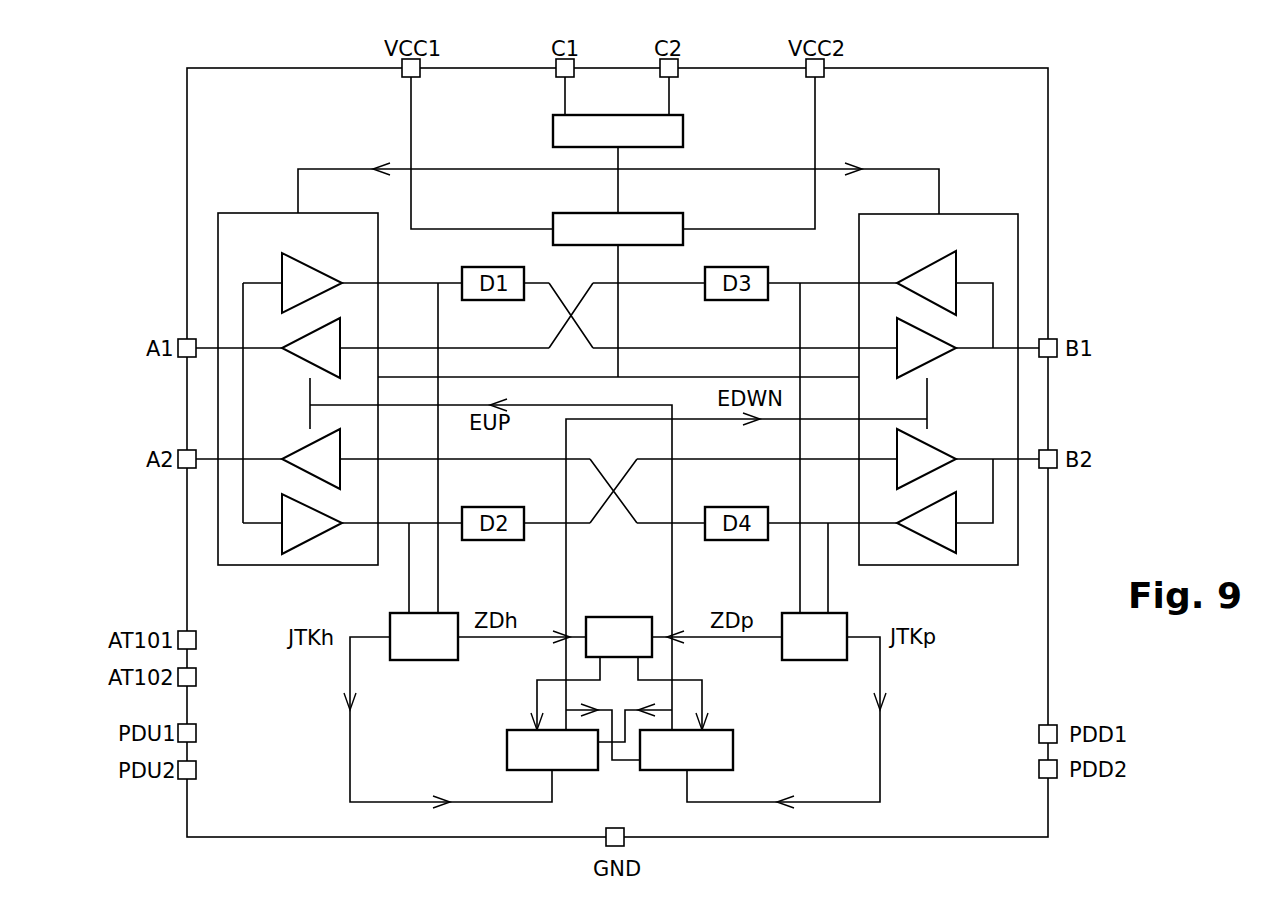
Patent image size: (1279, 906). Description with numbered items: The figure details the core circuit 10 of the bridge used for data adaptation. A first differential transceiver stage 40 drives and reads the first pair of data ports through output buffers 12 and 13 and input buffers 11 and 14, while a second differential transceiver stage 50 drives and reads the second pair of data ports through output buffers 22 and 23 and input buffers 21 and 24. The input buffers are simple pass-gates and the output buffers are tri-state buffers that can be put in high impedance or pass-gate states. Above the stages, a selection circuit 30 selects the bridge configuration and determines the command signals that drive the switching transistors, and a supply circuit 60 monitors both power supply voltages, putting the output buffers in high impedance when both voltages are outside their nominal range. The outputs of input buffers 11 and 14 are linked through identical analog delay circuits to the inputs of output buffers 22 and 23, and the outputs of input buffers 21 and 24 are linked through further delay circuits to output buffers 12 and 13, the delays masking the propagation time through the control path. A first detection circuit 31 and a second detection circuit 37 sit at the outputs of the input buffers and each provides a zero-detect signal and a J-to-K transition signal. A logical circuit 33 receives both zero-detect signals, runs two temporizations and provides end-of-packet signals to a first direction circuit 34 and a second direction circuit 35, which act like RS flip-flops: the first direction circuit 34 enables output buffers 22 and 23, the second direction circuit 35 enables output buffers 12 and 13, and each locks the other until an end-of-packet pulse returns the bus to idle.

The core circuit 10 is at (617, 452).
The input buffer 11 is at (312, 283).
The output buffer 12 is at (311, 348).
The output buffer 13 is at (311, 459).
The input buffer 14 is at (312, 524).
The input buffer 21 is at (926, 283).
The output buffer 22 is at (926, 348).
The output buffer 23 is at (926, 459).
The input buffer 24 is at (926, 522).
The selection circuit 30 is at (618, 131).
The first detection circuit 31 is at (424, 648).
The logical circuit 33 is at (618, 617).
The first direction circuit 34 is at (507, 760).
The second direction circuit 35 is at (733, 760).
The second detection circuit 37 is at (805, 650).
The first differential transceiver stage 40 is at (298, 389).
The second differential transceiver stage 50 is at (938, 389).
The supply circuit 60 is at (618, 229).